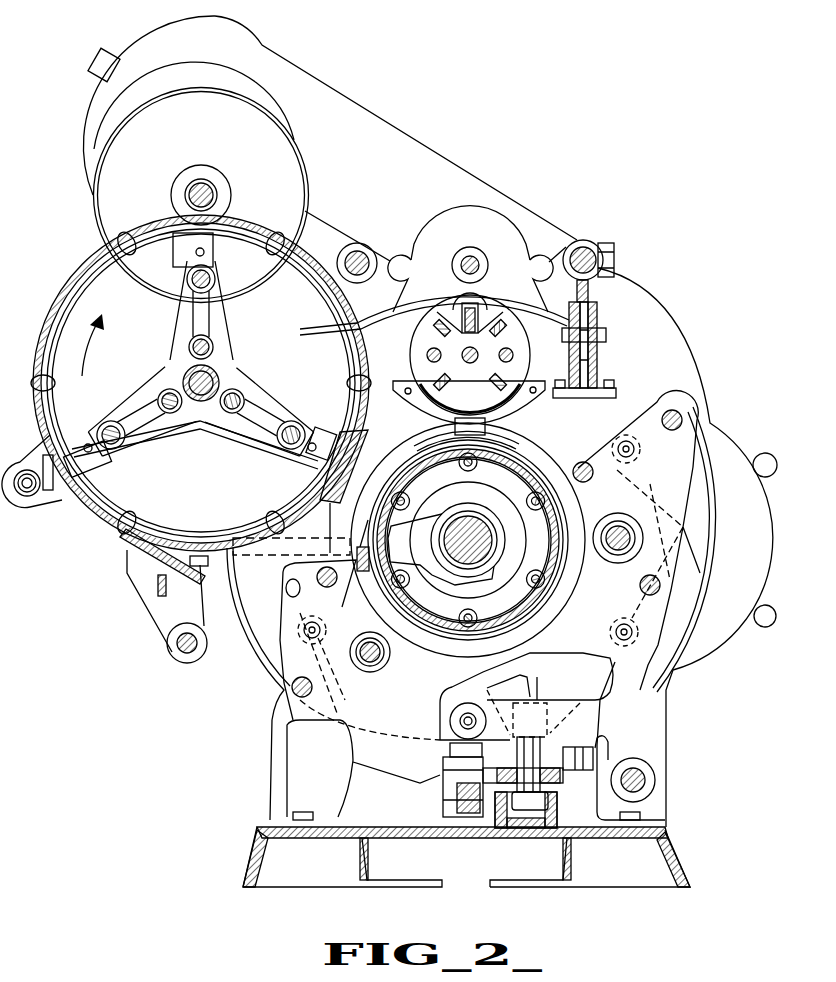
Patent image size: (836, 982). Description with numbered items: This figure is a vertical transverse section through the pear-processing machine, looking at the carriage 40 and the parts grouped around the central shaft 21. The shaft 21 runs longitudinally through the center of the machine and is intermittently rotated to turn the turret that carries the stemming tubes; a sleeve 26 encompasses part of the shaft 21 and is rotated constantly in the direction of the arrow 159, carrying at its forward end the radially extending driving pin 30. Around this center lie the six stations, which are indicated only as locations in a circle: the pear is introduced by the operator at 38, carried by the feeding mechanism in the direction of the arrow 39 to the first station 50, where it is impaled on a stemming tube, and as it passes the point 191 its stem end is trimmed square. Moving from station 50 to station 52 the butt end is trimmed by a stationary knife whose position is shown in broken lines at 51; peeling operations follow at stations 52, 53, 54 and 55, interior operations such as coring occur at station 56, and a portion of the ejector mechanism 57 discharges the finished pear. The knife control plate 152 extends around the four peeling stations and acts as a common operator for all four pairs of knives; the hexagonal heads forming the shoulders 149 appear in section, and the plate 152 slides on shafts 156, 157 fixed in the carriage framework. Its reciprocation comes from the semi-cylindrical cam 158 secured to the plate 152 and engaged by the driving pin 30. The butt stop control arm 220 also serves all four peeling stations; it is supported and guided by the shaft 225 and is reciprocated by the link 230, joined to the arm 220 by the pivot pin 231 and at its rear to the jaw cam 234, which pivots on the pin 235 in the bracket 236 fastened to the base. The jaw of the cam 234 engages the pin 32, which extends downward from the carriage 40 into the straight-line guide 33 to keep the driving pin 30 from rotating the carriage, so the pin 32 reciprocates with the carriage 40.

The shaft 21 is at (485, 540).
The sleeve 26 is at (464, 505).
The driving pin 30 is at (358, 545).
The pin 32 is at (532, 830).
The straight-line guide 33 is at (520, 830).
The pear introduction point 38 is at (78, 446).
The arrow 39 is at (99, 345).
The carriage 40 is at (430, 452).
The first station 50 is at (305, 462).
The butt-trimming knife position 51 is at (272, 553).
The station 52 is at (304, 634).
The station 53 is at (459, 721).
The station 54 is at (634, 632).
The station 55 is at (634, 449).
The station 56 is at (470, 362).
The ejector mechanism 57 is at (600, 316).
The shoulders 149 is at (583, 462).
The knife control plate 152 is at (283, 690).
The shaft 156 is at (378, 658).
The shaft 157 is at (633, 547).
The semi-cylindrical cam 158 is at (463, 640).
The arrow 159 is at (428, 606).
The point 191 is at (224, 261).
The butt stop control arm 220 is at (695, 585).
The shaft 225 is at (655, 775).
The link 230 is at (593, 725).
The pivot pin 231 is at (600, 748).
The jaw cam 234 is at (553, 787).
The pin 235 is at (447, 757).
The bracket 236 is at (472, 822).